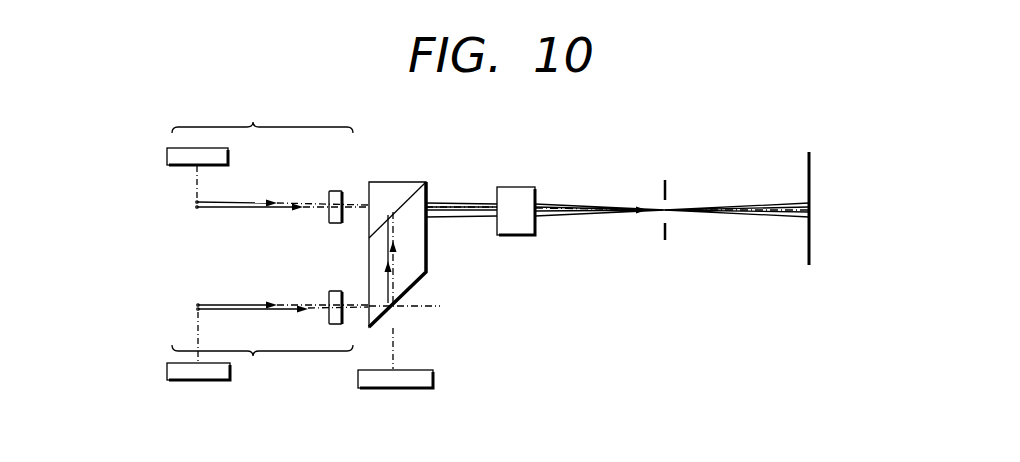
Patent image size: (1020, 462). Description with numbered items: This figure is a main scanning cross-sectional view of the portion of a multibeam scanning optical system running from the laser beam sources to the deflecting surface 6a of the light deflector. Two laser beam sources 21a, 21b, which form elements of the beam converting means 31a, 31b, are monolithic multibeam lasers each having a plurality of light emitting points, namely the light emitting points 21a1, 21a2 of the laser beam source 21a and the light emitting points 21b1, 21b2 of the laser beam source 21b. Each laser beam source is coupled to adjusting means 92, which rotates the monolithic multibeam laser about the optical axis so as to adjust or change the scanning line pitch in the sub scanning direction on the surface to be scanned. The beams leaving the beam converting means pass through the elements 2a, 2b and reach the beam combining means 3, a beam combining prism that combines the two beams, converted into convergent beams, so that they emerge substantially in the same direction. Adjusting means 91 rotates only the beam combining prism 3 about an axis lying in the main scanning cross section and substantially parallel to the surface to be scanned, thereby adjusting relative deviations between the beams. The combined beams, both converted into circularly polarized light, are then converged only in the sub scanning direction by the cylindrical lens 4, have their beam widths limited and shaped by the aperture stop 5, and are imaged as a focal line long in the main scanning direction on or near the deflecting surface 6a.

The adjusting means 92 is at (229, 157).
The adjusting means 91 is at (433, 379).
The beam converting means 31a is at (262, 117).
The beam converting means 31b is at (262, 363).
The laser beam source 21a is at (125, 175).
The light emitting point 21a1 is at (197, 202).
The light emitting point 21a2 is at (197, 207).
The laser beam source 21b is at (125, 278).
The light emitting point 21b1 is at (198, 305).
The light emitting point 21b2 is at (198, 309).
The first optical element 2a is at (335, 190).
The second optical element 2b is at (336, 290).
The beam combining means 3 is at (397, 182).
The cylindrical lens 4 is at (515, 186).
The aperture stop 5 is at (668, 186).
The deflecting surface 6a is at (811, 160).